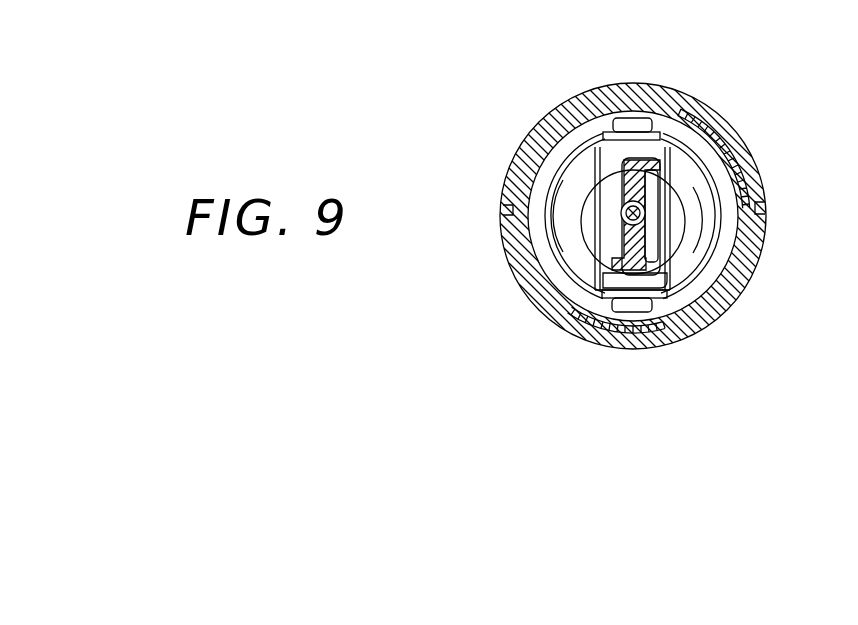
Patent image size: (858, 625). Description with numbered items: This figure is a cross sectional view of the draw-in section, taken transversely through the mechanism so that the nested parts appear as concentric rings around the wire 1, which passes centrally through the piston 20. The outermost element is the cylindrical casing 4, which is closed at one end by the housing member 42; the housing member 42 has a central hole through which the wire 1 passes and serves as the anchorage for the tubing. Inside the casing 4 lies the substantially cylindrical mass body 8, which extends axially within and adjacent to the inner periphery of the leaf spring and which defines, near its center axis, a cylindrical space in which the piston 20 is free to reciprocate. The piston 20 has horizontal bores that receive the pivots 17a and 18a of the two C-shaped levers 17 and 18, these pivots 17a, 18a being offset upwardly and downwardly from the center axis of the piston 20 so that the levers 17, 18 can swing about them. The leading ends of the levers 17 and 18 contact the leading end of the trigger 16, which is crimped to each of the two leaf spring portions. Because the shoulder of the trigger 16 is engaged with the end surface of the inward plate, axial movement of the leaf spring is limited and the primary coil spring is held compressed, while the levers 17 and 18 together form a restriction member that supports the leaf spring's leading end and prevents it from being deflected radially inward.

The wire 1 is at (618, 222).
The cylindrical casing 4 is at (745, 123).
The mass body 8 is at (705, 225).
The trigger 16 is at (690, 372).
The C-shaped lever 17 is at (650, 273).
The pivot 17a is at (652, 178).
The C-shaped lever 18 is at (617, 153).
The pivot 18a is at (600, 293).
The piston 20 is at (677, 215).
The housing member 42 is at (683, 93).